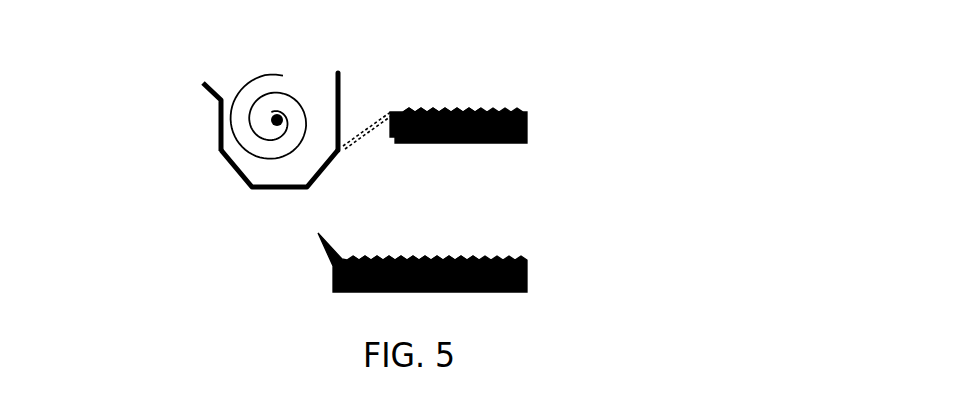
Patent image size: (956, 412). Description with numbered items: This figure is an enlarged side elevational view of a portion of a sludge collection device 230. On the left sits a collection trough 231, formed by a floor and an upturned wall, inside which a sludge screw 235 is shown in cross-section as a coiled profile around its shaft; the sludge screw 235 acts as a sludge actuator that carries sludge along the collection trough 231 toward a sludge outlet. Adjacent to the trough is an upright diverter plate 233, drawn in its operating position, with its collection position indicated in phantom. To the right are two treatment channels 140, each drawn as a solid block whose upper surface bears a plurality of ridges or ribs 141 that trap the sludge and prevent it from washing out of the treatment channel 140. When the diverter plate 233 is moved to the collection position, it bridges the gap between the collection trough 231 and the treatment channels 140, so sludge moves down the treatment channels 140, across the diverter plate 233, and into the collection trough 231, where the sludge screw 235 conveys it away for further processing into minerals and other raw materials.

The treatment channel 140 is at (530, 113).
The ridges or ribs 141 is at (475, 108).
The sludge collection device 230 is at (228, 177).
The collection trough 231 is at (218, 127).
The diverter plate 233 is at (333, 82).
The sludge screw 235 is at (263, 82).